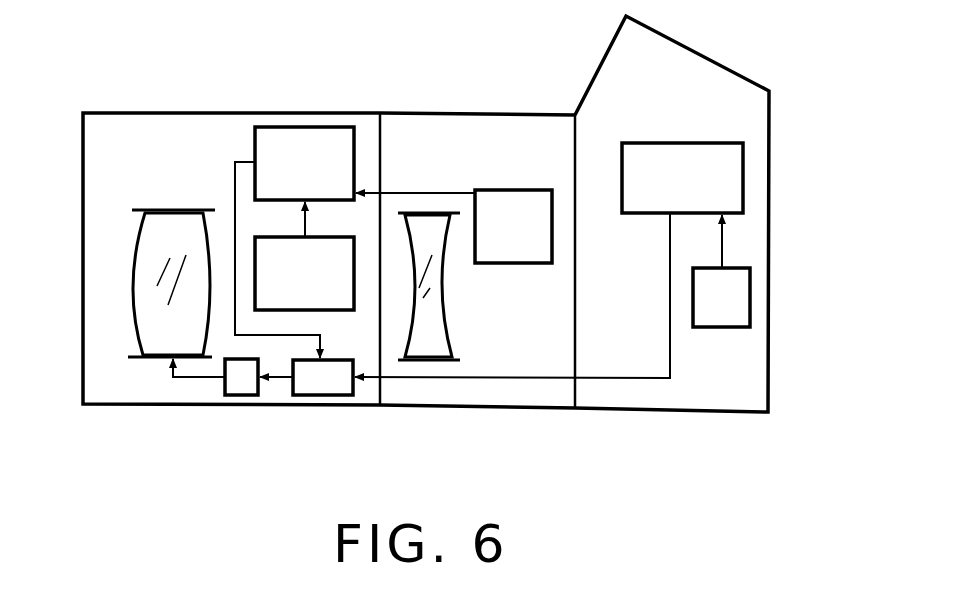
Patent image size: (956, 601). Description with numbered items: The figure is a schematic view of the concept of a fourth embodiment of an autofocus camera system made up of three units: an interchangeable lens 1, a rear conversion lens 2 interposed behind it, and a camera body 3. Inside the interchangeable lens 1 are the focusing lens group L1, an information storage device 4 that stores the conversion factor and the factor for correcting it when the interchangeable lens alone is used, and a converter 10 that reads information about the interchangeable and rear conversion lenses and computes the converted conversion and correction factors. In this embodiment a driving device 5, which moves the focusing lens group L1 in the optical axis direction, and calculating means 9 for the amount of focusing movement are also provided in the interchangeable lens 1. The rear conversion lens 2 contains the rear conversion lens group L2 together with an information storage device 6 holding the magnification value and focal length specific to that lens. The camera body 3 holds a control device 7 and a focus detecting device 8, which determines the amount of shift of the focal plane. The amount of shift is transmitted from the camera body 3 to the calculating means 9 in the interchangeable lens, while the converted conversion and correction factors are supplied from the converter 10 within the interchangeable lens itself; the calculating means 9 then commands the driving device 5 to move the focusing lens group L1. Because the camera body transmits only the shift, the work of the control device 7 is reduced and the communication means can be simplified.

The interchangeable lens 1 is at (148, 406).
The rear conversion lens 2 is at (490, 410).
The camera body 3 is at (673, 413).
The information storage device 4 is at (268, 237).
The driving device 5 is at (238, 396).
The information storage device 6 is at (521, 190).
The control device 7 is at (743, 180).
The focus detecting device 8 is at (750, 300).
The calculating means 9 is at (323, 396).
The converter 10 is at (313, 127).
The focusing lens group L1 is at (167, 210).
The rear conversion lens group L2 is at (430, 213).